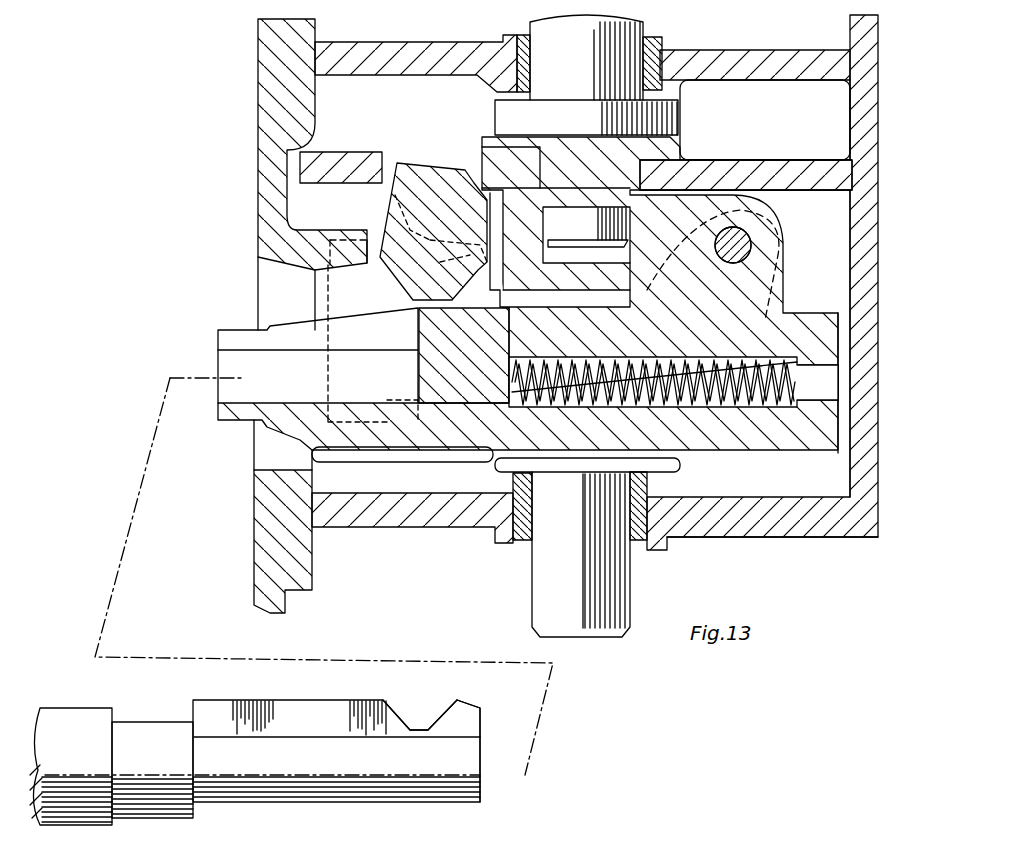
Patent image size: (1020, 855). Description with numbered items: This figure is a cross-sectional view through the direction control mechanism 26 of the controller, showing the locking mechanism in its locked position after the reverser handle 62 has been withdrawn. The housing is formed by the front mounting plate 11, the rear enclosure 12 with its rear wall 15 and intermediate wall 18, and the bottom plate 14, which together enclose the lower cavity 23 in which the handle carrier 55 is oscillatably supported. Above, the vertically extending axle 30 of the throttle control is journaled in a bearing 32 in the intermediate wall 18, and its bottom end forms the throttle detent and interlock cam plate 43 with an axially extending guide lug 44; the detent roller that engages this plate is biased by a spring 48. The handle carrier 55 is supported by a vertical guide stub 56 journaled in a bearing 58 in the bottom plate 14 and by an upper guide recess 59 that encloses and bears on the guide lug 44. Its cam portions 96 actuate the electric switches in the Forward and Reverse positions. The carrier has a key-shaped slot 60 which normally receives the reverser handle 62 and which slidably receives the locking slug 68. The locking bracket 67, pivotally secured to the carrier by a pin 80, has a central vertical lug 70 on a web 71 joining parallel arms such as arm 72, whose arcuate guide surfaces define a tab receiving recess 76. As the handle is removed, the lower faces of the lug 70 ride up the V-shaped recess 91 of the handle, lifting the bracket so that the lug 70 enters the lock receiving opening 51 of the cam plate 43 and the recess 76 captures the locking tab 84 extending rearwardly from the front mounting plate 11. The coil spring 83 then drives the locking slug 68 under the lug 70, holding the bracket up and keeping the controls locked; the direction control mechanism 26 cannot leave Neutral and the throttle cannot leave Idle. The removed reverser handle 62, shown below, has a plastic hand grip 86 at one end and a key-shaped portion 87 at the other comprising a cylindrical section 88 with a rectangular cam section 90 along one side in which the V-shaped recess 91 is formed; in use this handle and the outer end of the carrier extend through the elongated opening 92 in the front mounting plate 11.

The front mounting plate 11 is at (300, 62).
The rear enclosure 12 is at (890, 46).
The bottom plate 14 is at (770, 525).
The rear wall 15 is at (862, 140).
The intermediate wall 18 is at (783, 58).
The lower cavity 23 is at (322, 110).
The direction control mechanism 26 is at (797, 296).
The axle 30 is at (535, 26).
The bearing 32 is at (650, 72).
The throttle detent and interlock cam plate 43 is at (757, 168).
The guide lug 44 is at (568, 225).
The spring 48 is at (585, 845).
The lock receiving opening 51 is at (458, 155).
The handle carrier 55 is at (745, 445).
The vertical guide stub 56 is at (540, 612).
The bearing 58 is at (520, 522).
The upper guide recess 59 is at (618, 250).
The key-shaped slot 60 is at (287, 322).
The reverser handle 62 is at (150, 740).
The locking bracket 67 is at (324, 287).
The locking slug 68 is at (496, 318).
The central vertical lug 70 is at (420, 168).
The web 71 is at (405, 283).
The arm 72 is at (493, 283).
The tab receiving recess 76 is at (378, 243).
The pin 80 is at (750, 245).
The coil spring 83 is at (700, 370).
The locking tab 84 is at (347, 247).
The hand grip 86 is at (78, 805).
The key-shaped portion 87 is at (482, 745).
The cylindrical section 88 is at (465, 766).
The rectangular cam section 90 is at (285, 712).
The V-shaped recess 91 is at (400, 722).
The elongated opening 92 is at (270, 453).
The cam portions 96 is at (833, 338).